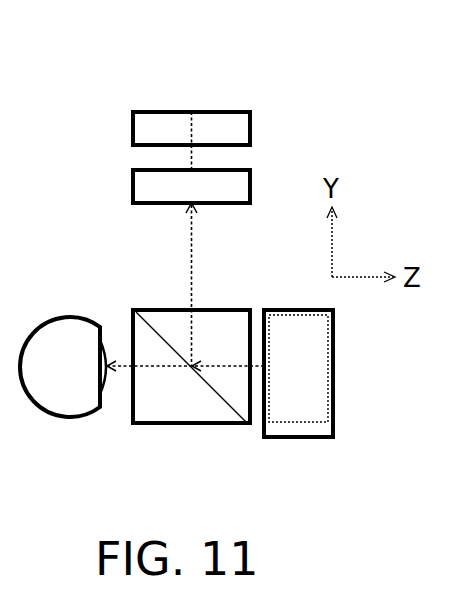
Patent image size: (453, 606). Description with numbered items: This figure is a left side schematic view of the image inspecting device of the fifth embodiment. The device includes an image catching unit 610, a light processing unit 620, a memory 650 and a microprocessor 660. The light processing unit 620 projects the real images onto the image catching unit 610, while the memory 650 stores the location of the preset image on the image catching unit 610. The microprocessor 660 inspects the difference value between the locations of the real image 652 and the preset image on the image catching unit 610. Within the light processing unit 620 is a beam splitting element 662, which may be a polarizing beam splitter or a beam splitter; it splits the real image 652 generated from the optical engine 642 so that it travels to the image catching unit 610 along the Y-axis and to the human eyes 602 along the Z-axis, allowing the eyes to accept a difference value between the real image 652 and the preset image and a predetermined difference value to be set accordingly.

The human eyes 602 is at (73, 418).
The image catching unit 610 is at (132, 185).
The light processing unit 620 is at (148, 310).
The optical engine 642 is at (337, 407).
The memory 650 is at (252, 127).
The real image 652 is at (260, 365).
The microprocessor 660 is at (128, 102).
The beam splitting element 662 is at (205, 393).